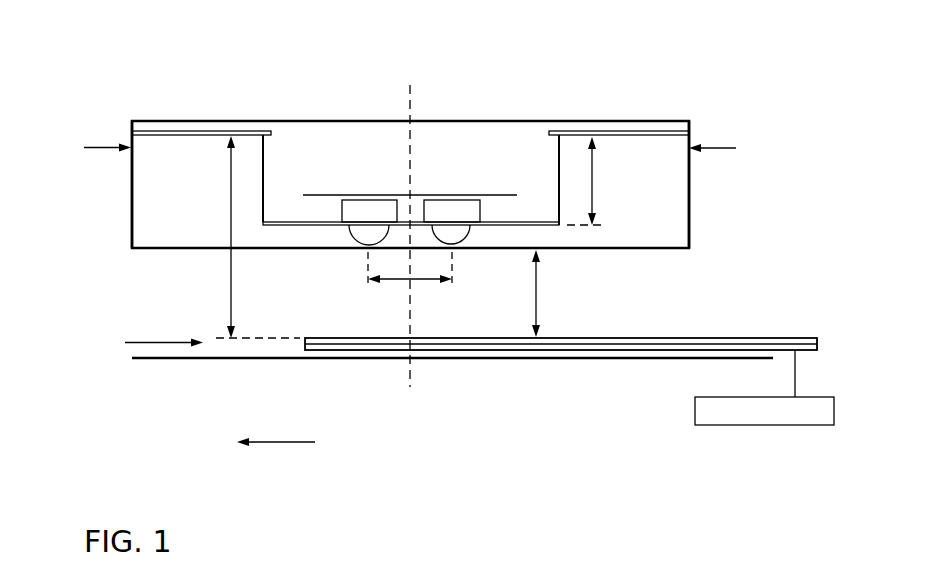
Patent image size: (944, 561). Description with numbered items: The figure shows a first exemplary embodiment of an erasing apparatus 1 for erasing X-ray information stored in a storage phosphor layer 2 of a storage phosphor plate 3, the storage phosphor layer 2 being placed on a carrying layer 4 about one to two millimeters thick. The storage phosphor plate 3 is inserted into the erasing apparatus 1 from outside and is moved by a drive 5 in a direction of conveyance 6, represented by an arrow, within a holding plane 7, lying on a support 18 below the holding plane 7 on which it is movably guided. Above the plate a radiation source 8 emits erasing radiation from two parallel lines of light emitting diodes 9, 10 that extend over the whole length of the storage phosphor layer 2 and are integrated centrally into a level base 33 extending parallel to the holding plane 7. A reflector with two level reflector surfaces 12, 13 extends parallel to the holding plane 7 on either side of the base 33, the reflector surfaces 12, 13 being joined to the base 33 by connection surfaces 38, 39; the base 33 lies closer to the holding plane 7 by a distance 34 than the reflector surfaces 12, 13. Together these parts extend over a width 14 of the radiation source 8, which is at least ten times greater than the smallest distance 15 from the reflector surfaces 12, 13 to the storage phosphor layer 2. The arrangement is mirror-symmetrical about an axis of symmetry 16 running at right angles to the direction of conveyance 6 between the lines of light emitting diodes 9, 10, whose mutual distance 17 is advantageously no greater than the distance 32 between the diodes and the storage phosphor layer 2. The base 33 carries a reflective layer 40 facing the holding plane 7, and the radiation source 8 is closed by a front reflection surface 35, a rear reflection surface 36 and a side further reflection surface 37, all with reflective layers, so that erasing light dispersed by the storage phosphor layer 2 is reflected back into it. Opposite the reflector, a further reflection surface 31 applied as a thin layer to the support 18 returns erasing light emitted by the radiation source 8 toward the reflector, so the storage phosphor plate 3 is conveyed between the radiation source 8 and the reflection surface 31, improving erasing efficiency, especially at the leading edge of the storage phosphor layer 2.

The erasing apparatus 1 is at (220, 48).
The storage phosphor layer 2 is at (817, 340).
The storage phosphor plate 3 is at (610, 359).
The carrying layer 4 is at (817, 350).
The drive 5 is at (740, 425).
The direction of conveyance 6 is at (283, 447).
The holding plane 7 is at (142, 340).
The radiation source 8 is at (497, 120).
The line of light emitting diodes 9 is at (363, 198).
The line of light emitting diodes 10 is at (445, 208).
The reflector surface 12 is at (180, 132).
The reflector surface 13 is at (628, 131).
The width 14 is at (98, 145).
The smallest distance 15 is at (230, 182).
The axis of symmetry 16 is at (410, 93).
The distance 17 is at (430, 279).
The support 18 is at (172, 360).
The reflection surface 31 is at (263, 346).
The distance 32 is at (537, 285).
The base 33 is at (313, 226).
The distance 34 is at (593, 155).
The reflection surface 35 is at (131, 190).
The reflection surface 36 is at (690, 173).
The further reflection surface 37 is at (438, 118).
The connection surface 38 is at (264, 163).
The connection surface 39 is at (558, 167).
The reflective layer 40 is at (512, 240).